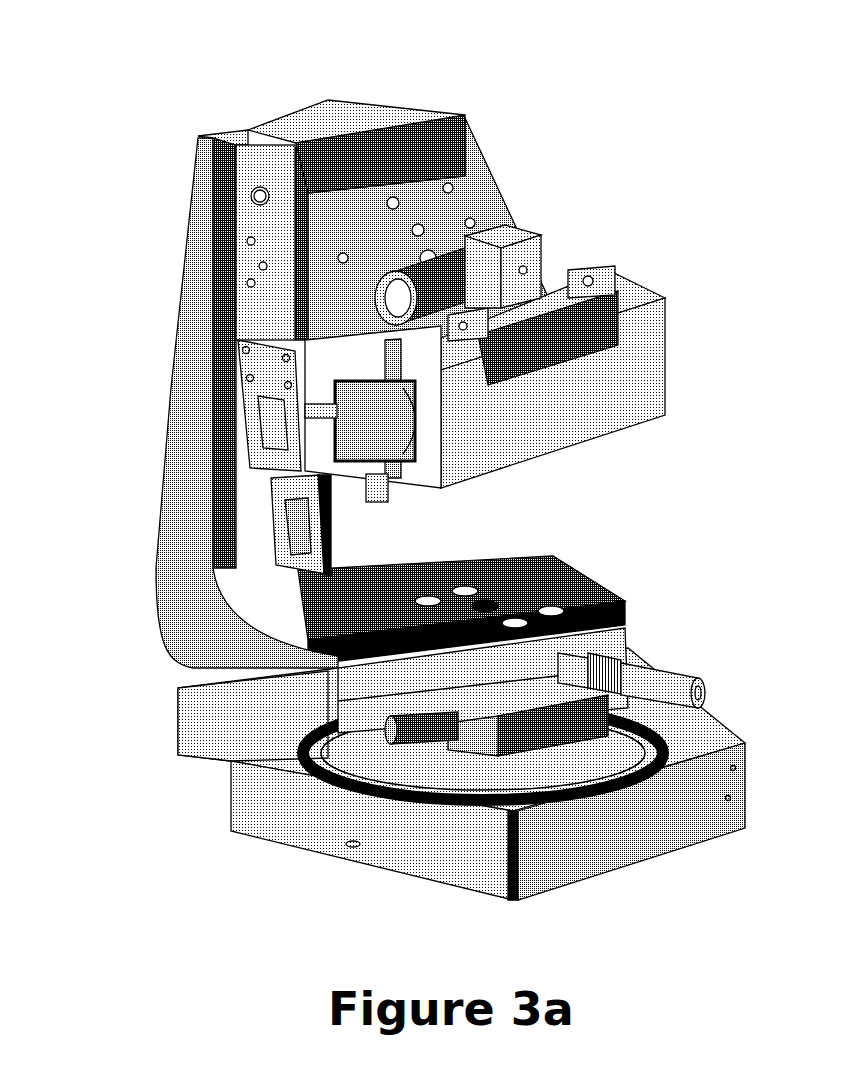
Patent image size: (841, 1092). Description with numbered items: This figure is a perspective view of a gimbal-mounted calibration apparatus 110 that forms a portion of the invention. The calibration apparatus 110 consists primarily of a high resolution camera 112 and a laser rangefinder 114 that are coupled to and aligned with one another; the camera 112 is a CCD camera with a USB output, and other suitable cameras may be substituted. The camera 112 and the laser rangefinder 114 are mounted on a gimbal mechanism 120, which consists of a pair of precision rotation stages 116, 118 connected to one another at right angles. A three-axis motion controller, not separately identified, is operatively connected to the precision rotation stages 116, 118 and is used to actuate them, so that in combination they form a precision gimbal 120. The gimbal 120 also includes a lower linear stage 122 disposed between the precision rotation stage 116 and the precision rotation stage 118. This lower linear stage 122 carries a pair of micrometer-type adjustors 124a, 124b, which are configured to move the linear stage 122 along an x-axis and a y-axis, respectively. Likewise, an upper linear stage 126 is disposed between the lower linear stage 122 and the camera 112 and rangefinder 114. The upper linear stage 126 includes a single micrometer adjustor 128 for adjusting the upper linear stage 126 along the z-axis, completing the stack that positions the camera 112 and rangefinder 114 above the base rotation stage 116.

The gimbal-mounted calibration apparatus 110 is at (176, 52).
The high resolution camera 112 is at (513, 215).
The laser rangefinder 114 is at (590, 415).
The precision rotation stage 116 is at (670, 823).
The precision rotation stage 118 is at (317, 177).
The gimbal mechanism 120 is at (237, 157).
The lower linear stage 122 is at (523, 727).
The micrometer-type adjustor 124a is at (657, 667).
The micrometer-type adjustor 124b is at (417, 727).
The upper linear stage 126 is at (430, 108).
The micrometer adjustor 128 is at (375, 485).